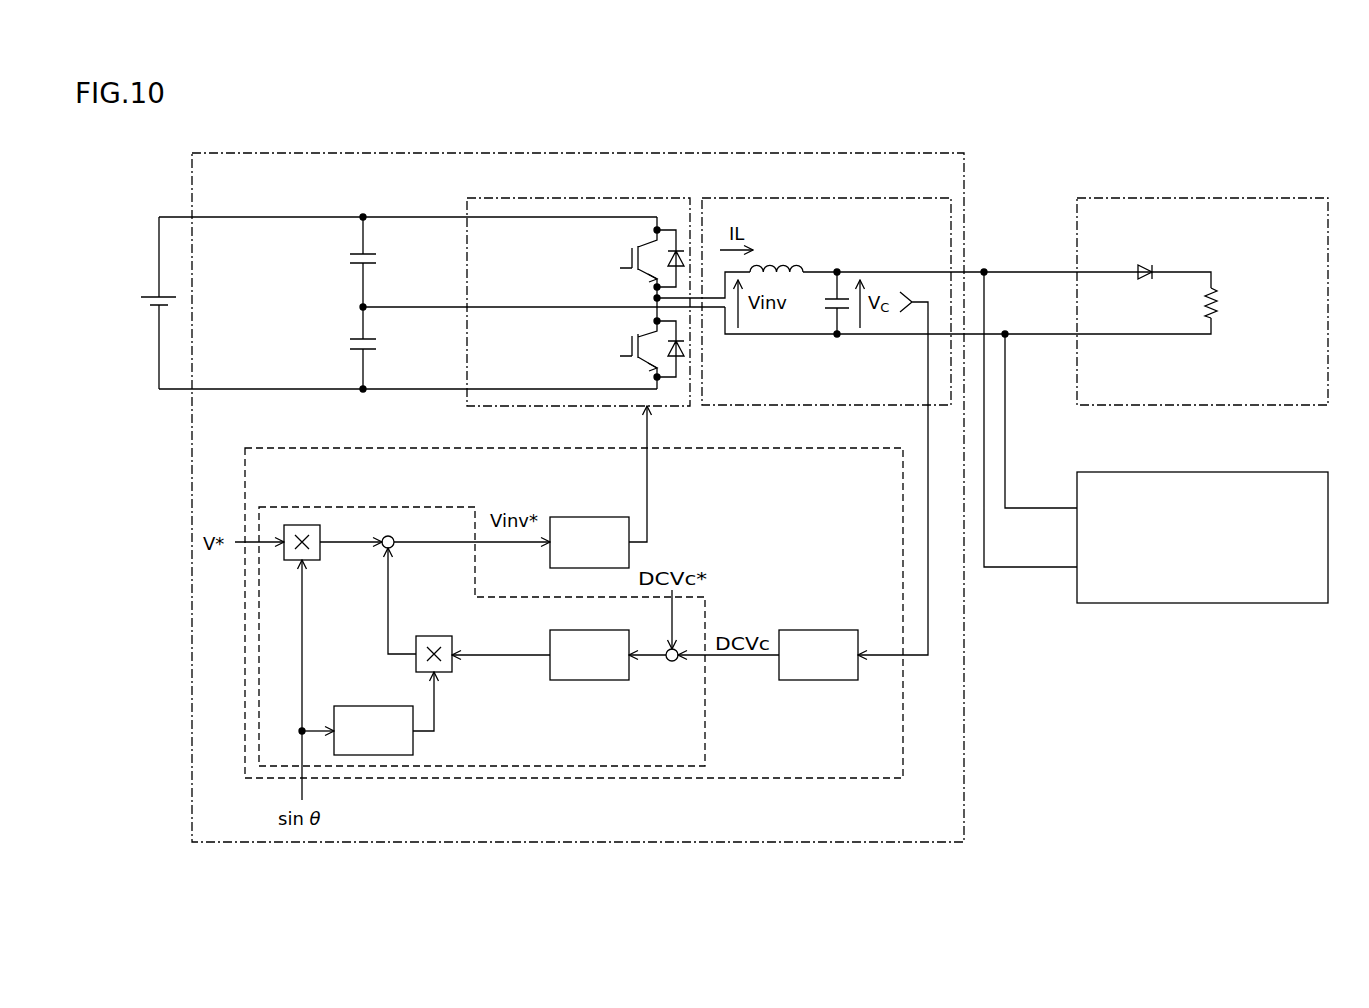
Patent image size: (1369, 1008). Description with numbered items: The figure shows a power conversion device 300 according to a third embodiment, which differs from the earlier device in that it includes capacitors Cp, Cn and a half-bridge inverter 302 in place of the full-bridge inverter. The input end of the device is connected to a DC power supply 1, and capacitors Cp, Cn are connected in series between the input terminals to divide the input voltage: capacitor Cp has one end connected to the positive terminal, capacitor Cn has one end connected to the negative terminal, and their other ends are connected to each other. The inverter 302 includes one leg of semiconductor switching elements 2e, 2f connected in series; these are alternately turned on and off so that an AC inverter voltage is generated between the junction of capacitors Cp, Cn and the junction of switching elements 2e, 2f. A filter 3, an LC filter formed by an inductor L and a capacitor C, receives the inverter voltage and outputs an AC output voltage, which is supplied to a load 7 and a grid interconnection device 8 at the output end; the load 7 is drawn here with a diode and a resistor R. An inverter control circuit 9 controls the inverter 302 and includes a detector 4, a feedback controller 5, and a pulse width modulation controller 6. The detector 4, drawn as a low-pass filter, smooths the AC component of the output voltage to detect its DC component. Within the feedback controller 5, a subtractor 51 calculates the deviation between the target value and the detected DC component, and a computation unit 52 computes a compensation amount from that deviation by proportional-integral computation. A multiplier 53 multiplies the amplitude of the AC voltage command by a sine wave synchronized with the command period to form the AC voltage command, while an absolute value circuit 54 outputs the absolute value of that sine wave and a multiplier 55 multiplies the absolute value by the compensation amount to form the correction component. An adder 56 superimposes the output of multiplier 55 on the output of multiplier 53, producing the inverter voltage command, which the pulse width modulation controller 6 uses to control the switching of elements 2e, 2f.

The DC power supply 1 is at (155, 296).
The semiconductor switching element 2e is at (620, 262).
The semiconductor switching element 2f is at (620, 352).
The filter 3 is at (728, 197).
The detector 4 is at (815, 630).
The feedback controller 5 is at (440, 507).
The pulse width modulation controller 6 is at (592, 517).
The load 7 is at (1108, 197).
The grid interconnection device 8 is at (1115, 470).
The inverter control circuit 9 is at (773, 448).
The subtractor 51 is at (672, 661).
The computation unit 52 is at (590, 630).
The multiplier 53 is at (302, 525).
The absolute value circuit 54 is at (375, 706).
The multiplier 55 is at (434, 636).
The adder 56 is at (394, 537).
The power conversion device 300 is at (250, 152).
The inverter 302 is at (515, 197).
The capacitor Cp is at (350, 254).
The capacitor Cn is at (350, 339).
The inductor L is at (782, 261).
The capacitor C is at (826, 297).
The resistor R is at (1220, 303).